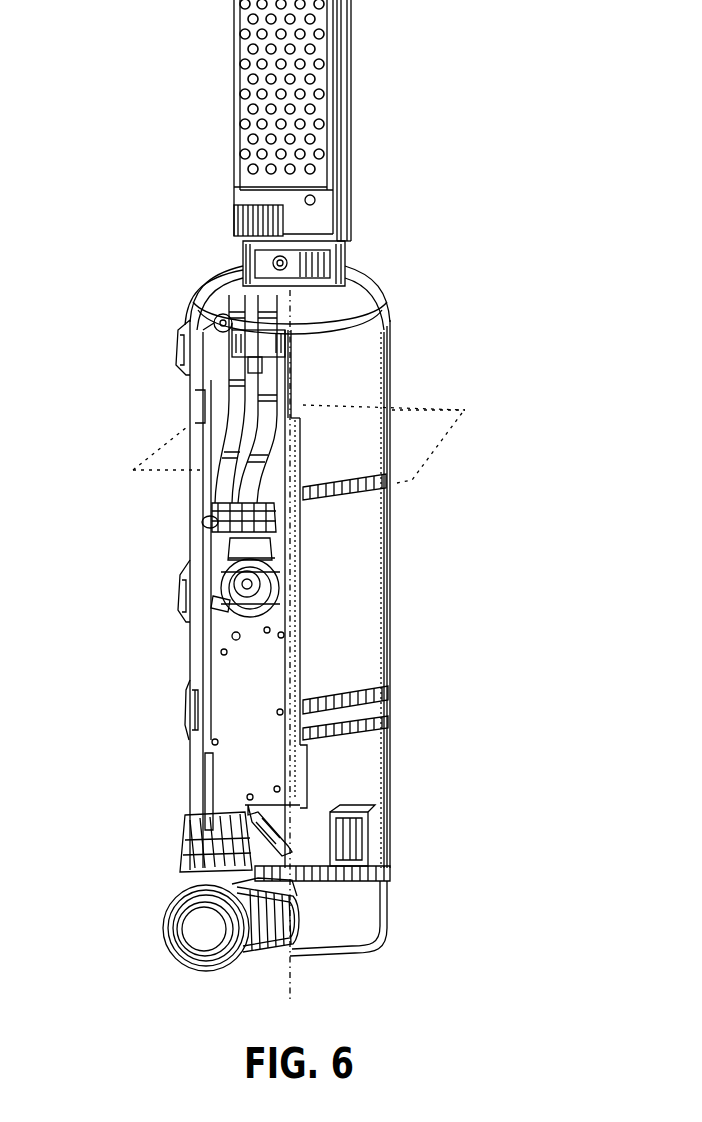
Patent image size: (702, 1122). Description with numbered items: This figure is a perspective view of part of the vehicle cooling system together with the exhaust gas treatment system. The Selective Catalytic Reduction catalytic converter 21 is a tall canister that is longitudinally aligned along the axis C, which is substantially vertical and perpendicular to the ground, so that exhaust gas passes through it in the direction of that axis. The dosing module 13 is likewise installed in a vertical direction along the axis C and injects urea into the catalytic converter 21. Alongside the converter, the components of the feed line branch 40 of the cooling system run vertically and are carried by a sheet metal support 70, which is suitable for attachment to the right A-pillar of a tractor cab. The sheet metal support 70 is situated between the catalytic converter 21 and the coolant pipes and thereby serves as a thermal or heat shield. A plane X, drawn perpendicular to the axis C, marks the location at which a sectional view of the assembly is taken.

The Selective Catalytic Reduction (SCR) catalytic converter 21 is at (362, 365).
The feed line branch 40 is at (230, 425).
The dosing module 13 is at (226, 606).
The sheet metal support 70 is at (243, 738).
The plane X is at (447, 444).
The axis C is at (292, 358).